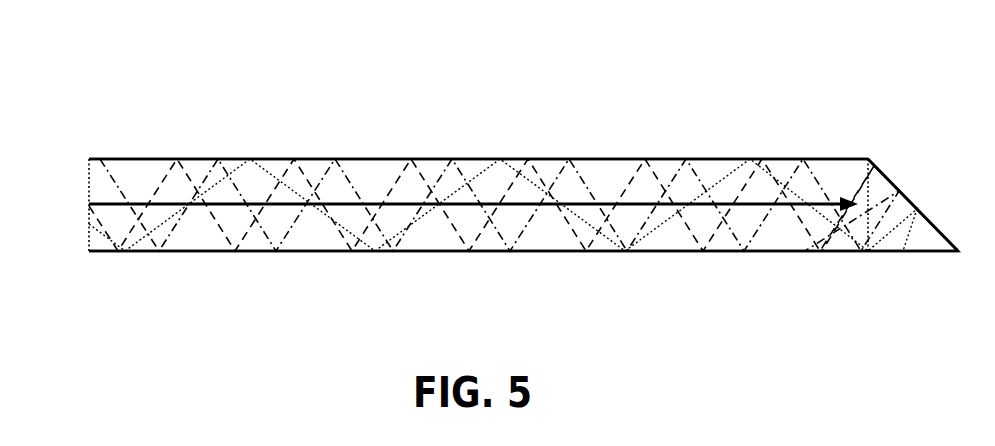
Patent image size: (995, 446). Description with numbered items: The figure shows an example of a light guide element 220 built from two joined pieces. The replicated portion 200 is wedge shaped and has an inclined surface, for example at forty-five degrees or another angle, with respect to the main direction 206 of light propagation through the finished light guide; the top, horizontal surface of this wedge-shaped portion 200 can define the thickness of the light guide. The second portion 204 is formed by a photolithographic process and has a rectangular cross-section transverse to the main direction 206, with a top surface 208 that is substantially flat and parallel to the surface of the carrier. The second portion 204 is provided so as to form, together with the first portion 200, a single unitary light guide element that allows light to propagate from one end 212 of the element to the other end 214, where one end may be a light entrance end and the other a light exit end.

The light guide assembly 220 is at (152, 88).
The one end 212 is at (88, 178).
The other end 214 is at (895, 185).
The top surface 208 is at (592, 158).
The main direction of light propagation 206 is at (515, 202).
The second portion 204 is at (832, 274).
The replicated portion 200 is at (957, 274).